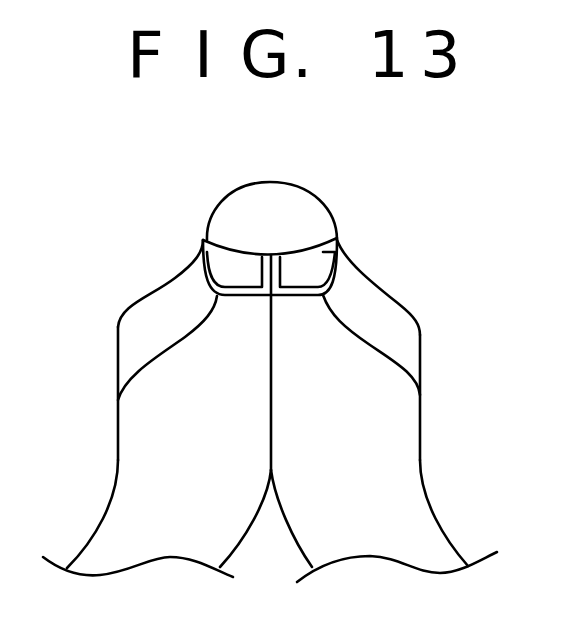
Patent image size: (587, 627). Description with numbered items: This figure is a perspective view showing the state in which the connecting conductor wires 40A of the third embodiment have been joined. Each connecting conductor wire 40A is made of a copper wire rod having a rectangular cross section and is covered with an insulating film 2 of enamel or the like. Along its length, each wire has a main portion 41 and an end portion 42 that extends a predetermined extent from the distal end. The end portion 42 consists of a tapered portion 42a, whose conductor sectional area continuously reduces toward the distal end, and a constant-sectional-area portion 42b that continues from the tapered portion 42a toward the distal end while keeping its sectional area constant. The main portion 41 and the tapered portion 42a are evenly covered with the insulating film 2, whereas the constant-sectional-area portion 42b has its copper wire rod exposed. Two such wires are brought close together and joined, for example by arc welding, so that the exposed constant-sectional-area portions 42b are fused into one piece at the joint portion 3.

The insulating film 2 is at (130, 498).
The joint portion 3 is at (242, 207).
The connecting conductor wire 40A is at (123, 432).
The main portion 41 is at (472, 530).
The end portion 42 is at (433, 183).
The tapered portion 42a is at (430, 324).
The constant-sectional-area portion 42b is at (340, 240).